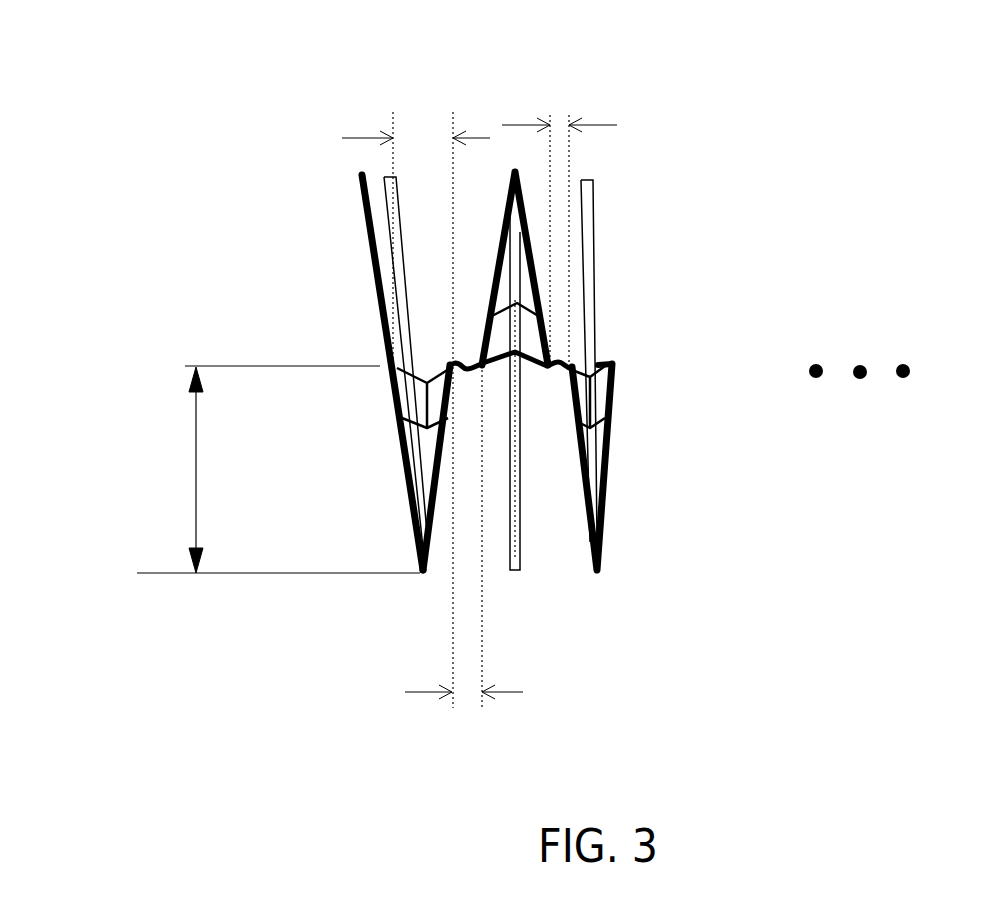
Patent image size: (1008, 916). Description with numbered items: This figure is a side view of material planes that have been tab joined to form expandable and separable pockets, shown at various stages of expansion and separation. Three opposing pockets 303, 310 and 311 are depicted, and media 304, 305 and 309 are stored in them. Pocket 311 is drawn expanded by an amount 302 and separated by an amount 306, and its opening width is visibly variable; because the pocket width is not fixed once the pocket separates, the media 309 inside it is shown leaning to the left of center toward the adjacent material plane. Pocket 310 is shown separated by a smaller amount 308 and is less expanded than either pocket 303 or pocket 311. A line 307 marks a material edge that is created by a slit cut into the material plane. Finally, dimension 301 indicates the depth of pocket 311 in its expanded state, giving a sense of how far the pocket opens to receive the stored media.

The pocket depth dimension 301 is at (165, 442).
The expansion amount 302 is at (420, 104).
The pocket 303 is at (520, 292).
The media 304 is at (593, 183).
The media 305 is at (535, 558).
The separation amount 306 is at (463, 632).
The material edge line 307 is at (470, 358).
The separation amount 308 is at (560, 113).
The media 309 is at (383, 188).
The pocket 310 is at (595, 460).
The pocket 311 is at (423, 478).